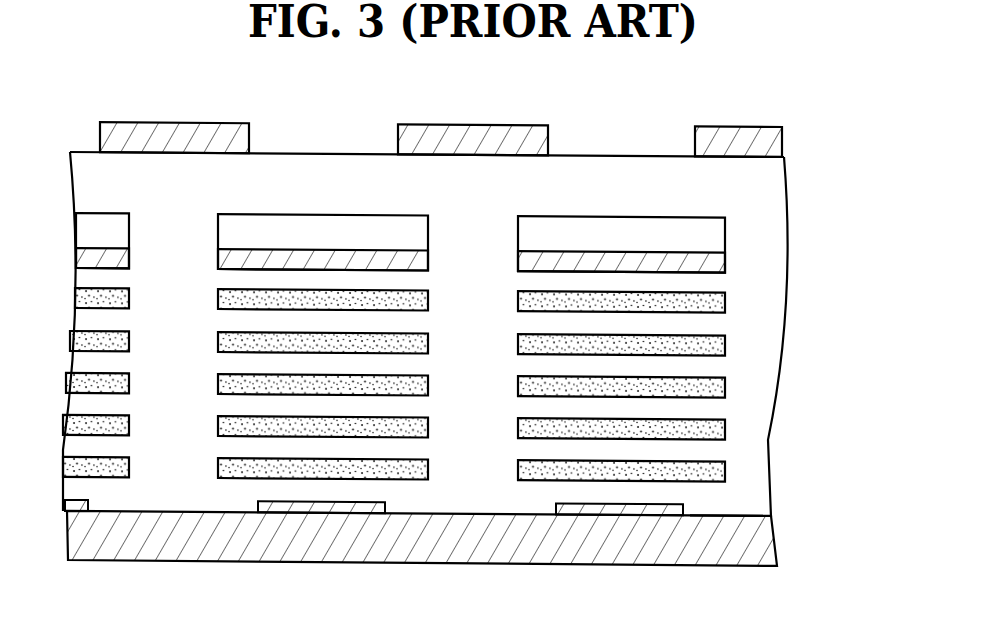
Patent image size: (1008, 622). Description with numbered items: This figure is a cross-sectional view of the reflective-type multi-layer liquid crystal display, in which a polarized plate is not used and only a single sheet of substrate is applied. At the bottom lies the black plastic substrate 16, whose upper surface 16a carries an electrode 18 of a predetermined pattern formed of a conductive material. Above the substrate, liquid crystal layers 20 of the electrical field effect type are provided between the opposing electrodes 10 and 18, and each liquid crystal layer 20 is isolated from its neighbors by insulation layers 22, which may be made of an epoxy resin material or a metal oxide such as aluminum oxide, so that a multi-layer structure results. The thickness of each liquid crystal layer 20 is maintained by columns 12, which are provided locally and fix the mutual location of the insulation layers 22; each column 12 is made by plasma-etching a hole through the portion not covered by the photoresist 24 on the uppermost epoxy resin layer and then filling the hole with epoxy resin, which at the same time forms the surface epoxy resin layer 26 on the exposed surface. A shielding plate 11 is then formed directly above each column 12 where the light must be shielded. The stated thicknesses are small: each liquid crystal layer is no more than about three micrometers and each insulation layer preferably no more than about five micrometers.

The opposing electrode 10 is at (315, 250).
The shielding plate 11 is at (249, 122).
The column 12 is at (166, 181).
The black plastic substrate 16 is at (722, 567).
The substrate surface 16a is at (755, 520).
The electrode 18 is at (302, 507).
The liquid crystal layer 20 is at (713, 369).
The insulation layer 22 is at (725, 348).
The photoresist 24 is at (712, 237).
The surface epoxy resin layer 26 is at (770, 183).